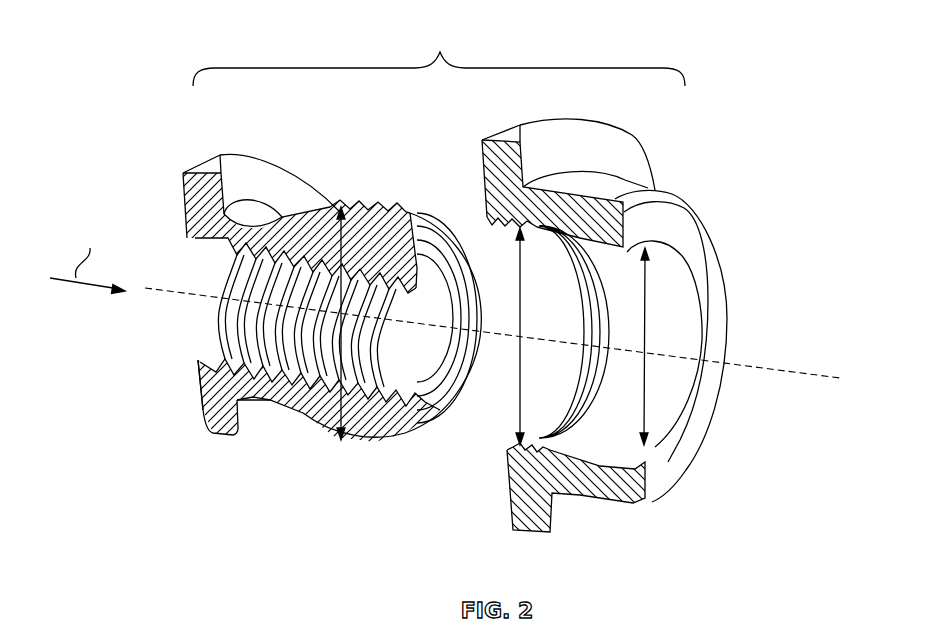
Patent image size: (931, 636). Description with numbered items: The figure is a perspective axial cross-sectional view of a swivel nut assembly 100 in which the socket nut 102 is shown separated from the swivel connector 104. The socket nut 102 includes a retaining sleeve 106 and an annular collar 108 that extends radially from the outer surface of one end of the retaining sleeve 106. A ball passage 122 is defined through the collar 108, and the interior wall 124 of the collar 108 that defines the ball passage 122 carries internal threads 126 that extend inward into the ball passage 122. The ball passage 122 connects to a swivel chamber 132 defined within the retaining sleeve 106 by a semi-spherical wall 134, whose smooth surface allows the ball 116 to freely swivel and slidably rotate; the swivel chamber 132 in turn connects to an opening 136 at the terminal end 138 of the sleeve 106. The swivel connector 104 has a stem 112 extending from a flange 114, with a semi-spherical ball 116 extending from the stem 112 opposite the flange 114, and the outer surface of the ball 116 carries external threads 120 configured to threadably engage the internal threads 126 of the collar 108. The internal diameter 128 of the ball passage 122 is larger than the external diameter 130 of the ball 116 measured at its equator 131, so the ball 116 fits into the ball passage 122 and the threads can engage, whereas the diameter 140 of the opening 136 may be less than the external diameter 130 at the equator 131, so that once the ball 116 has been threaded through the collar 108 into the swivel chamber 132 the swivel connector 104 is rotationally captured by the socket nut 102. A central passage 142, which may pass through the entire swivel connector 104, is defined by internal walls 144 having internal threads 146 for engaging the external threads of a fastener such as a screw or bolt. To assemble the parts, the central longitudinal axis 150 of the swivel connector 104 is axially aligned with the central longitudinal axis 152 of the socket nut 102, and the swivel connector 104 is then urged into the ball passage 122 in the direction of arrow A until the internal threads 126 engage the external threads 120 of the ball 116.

The swivel nut assembly 100 is at (439, 55).
The socket nut 102 is at (673, 173).
The swivel connector 104 is at (403, 207).
The retaining sleeve 106 is at (648, 160).
The annular collar 108 is at (553, 142).
The stem 112 is at (248, 210).
The flange 114 is at (220, 427).
The ball 116 is at (410, 222).
The external threads 120 is at (341, 207).
The ball passage 122 is at (507, 450).
The interior wall 124 is at (578, 445).
The internal threads 126 is at (608, 245).
The internal diameter 128 is at (520, 348).
The external diameter 130 is at (305, 395).
The equator 131 is at (345, 442).
The swivel chamber 132 is at (710, 363).
The semi-spherical wall 134 is at (700, 390).
The opening 136 is at (700, 297).
The terminal end 138 is at (706, 238).
The diameter 140 is at (658, 455).
The central passage 142 is at (425, 352).
The internal walls 144 is at (203, 427).
The internal threads 146 is at (275, 400).
The central longitudinal axis 150 is at (163, 296).
The central longitudinal axis 152 is at (797, 377).